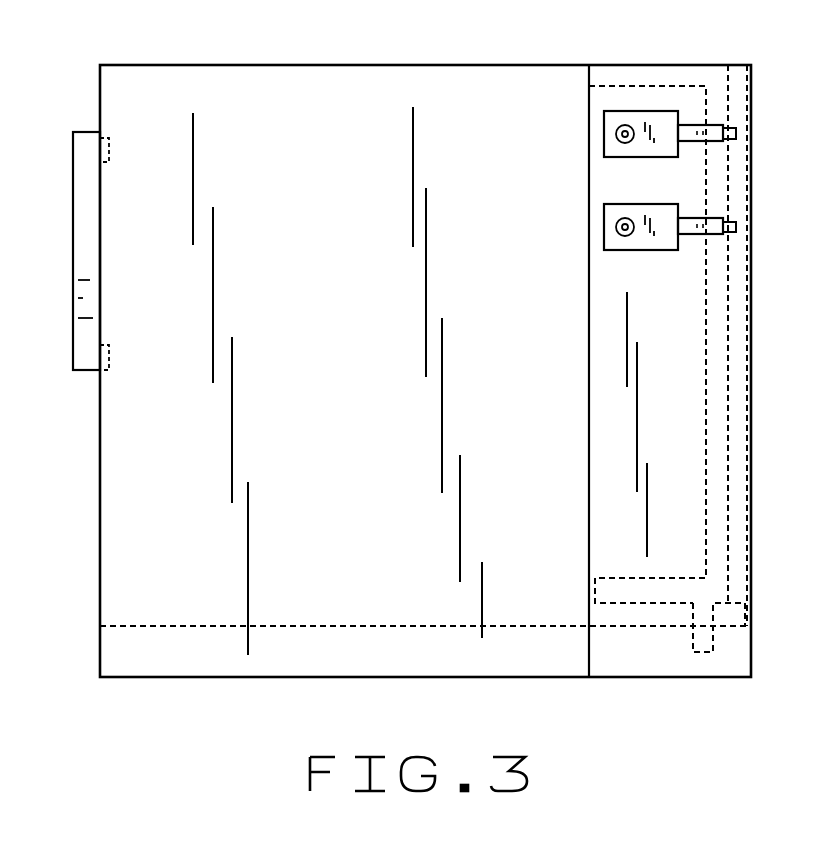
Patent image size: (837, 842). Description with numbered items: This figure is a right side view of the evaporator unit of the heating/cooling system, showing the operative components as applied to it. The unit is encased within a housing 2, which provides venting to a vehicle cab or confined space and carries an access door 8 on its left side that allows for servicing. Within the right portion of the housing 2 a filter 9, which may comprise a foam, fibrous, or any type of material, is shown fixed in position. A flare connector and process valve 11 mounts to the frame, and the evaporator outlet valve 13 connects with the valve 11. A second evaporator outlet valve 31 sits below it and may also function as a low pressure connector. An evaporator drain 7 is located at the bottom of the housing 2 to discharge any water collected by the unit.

The housing 2 is at (208, 88).
The access door 8 is at (82, 192).
The flare connector and process valve 11 is at (613, 145).
The evaporator outlet valve 31 is at (613, 240).
The evaporator outlet valve 13 is at (736, 133).
The filter 9 is at (733, 305).
The evaporator drain 7 is at (713, 640).